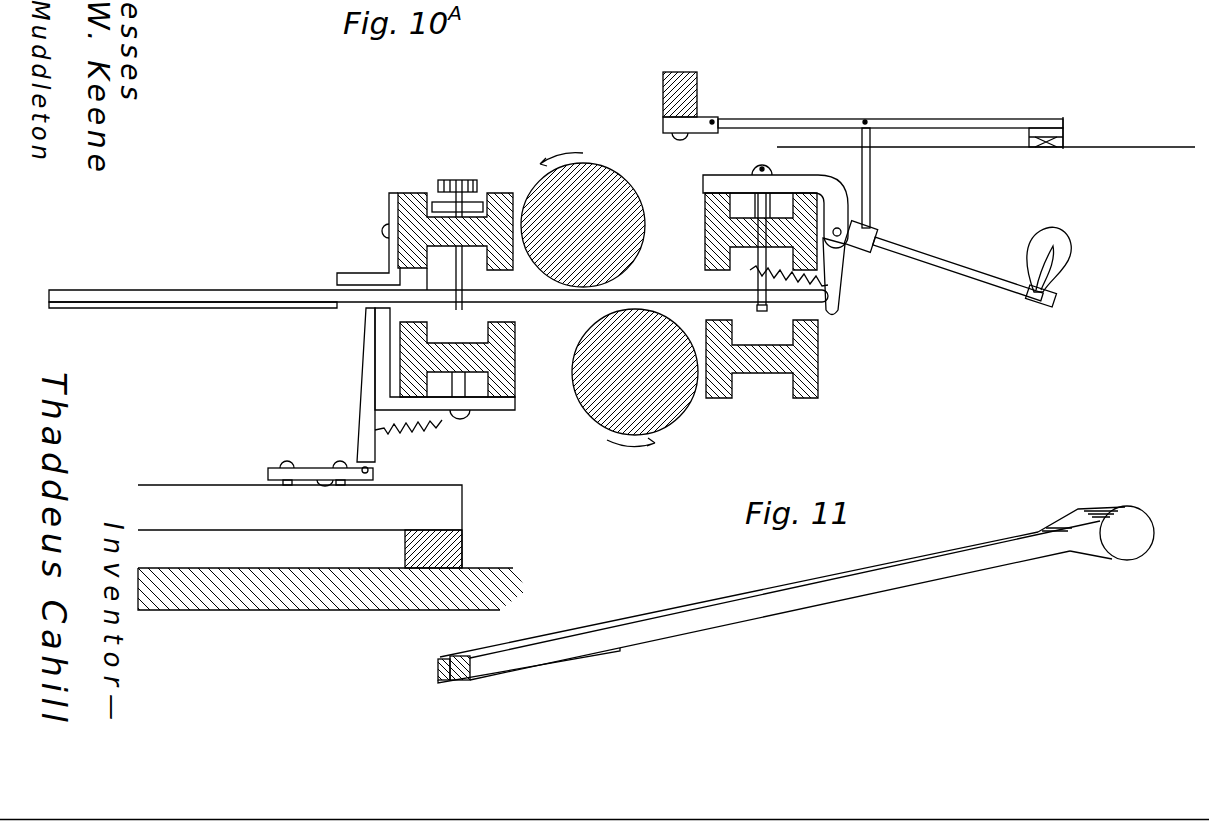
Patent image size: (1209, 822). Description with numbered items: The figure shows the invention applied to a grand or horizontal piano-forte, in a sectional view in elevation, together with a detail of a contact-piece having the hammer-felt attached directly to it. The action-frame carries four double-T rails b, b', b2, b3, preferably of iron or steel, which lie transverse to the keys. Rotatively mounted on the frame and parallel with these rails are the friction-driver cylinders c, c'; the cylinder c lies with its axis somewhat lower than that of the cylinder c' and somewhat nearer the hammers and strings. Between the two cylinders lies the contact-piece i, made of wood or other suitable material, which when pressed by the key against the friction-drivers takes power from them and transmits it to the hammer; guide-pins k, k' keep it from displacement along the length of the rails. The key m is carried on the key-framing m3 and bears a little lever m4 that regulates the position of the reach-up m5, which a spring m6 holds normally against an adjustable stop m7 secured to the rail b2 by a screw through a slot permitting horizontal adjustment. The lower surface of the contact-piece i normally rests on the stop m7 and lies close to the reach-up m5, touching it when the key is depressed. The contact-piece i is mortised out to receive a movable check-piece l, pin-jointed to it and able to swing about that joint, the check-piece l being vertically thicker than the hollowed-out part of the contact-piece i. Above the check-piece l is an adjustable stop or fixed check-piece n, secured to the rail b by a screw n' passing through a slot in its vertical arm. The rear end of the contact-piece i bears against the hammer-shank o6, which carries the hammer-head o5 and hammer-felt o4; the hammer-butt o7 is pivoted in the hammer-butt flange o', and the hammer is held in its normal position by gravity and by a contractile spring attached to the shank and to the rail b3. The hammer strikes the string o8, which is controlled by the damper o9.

In FIG. 10A, the double-T rail b is at (455, 212).
In FIG. 10A, the double-T rail b' is at (742, 231).
In FIG. 10A, the double-T rail b2 is at (490, 368).
In FIG. 10A, the double-T rail b3 is at (803, 362).
In FIG. 10A, the friction-driver cylinder c is at (628, 377).
In FIG. 10A, the friction-driver cylinder c' is at (596, 220).
In FIG. 10A, the guide-pin k is at (763, 268).
In FIG. 10A, the guide-pin k' is at (452, 245).
In FIG. 10A, the adjustable stop or fixed check-piece n is at (382, 241).
In FIG. 10A, the screw n' is at (363, 216).
In FIG. 10A, the contact-piece i is at (296, 292).
In FIG. 11, the contact-piece i is at (823, 604).
In FIG. 10A, the movable check-piece l is at (204, 308).
In FIG. 11, the movable check-piece l is at (458, 683).
In FIG. 10A, the key m is at (300, 526).
In FIG. 10A, the key-framing m3 is at (325, 549).
In FIG. 10A, the little lever m4 is at (320, 459).
In FIG. 10A, the reach-up m5 is at (362, 368).
In FIG. 10A, the spring m6 is at (422, 435).
In FIG. 10A, the adjustable stop m7 is at (492, 406).
In FIG. 10A, the hammer-butt flange o' is at (775, 199).
In FIG. 10A, the lever o'' is at (854, 276).
In FIG. 10A, the hammer-felt o4 is at (1068, 244).
In FIG. 11, the hammer-felt o4 is at (1143, 523).
In FIG. 10A, the hammer-head o5 is at (1038, 284).
In FIG. 10A, the hammer-shank o6 is at (947, 264).
In FIG. 10A, the hammer-butt o7 is at (853, 228).
In FIG. 10A, the string o8 is at (968, 149).
In FIG. 10A, the damper o9 is at (1062, 131).